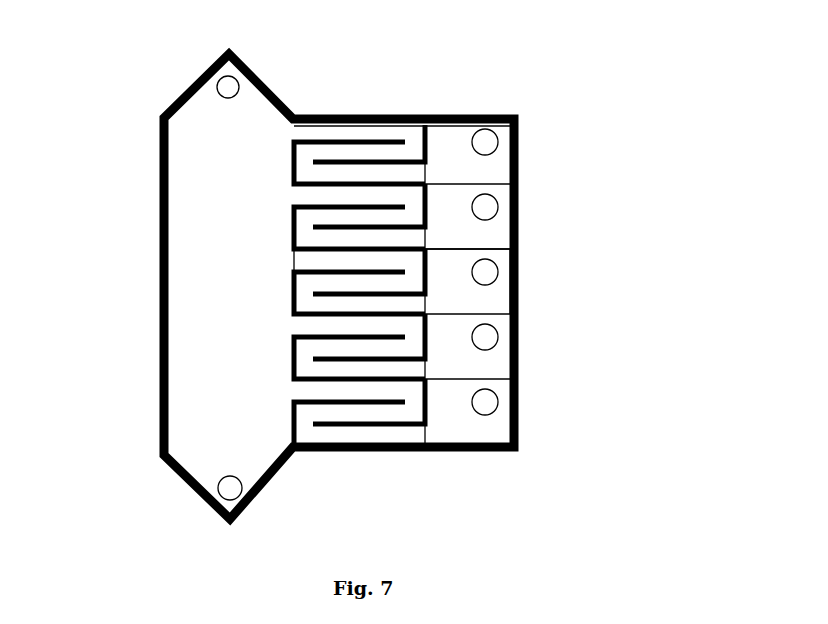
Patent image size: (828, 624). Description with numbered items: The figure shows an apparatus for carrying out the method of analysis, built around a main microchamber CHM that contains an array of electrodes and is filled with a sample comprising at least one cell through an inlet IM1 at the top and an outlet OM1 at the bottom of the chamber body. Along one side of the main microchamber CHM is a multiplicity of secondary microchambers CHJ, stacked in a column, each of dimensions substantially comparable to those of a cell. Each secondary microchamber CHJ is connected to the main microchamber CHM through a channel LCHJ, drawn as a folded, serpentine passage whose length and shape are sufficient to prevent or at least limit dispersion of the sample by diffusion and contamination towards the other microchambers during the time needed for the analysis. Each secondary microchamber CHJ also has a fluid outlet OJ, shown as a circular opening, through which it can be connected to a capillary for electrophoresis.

The inlet IM1 is at (219, 80).
The outlet OM1 is at (230, 500).
The main microchamber CHM is at (232, 193).
The secondary microchamber CHJ is at (468, 250).
The channel LCHJ is at (380, 262).
The fluid outlet OJ is at (475, 260).